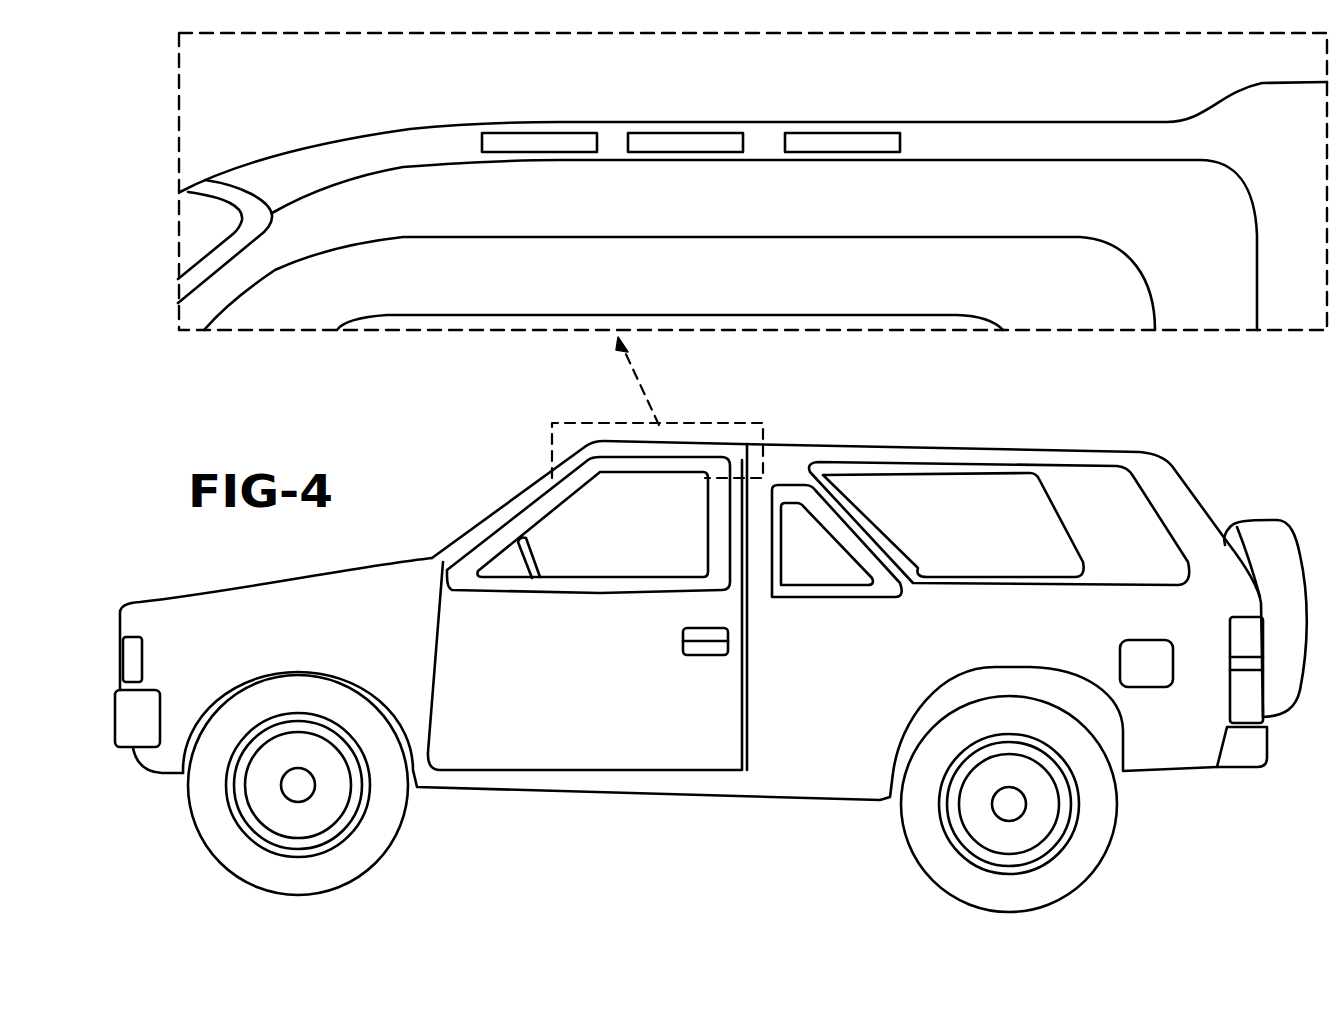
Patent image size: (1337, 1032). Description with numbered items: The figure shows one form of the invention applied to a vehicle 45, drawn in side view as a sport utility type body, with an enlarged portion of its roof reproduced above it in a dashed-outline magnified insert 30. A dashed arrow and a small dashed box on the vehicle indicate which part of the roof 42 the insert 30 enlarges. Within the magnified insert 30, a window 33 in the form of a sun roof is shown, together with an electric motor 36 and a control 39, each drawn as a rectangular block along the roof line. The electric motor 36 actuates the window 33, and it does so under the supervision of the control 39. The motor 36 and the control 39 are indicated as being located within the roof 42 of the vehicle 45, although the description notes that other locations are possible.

The magnified insert 30 is at (283, 332).
The window 33 is at (908, 133).
The electric motor 36 is at (513, 133).
The control 39 is at (712, 133).
The roof 42 is at (993, 122).
The vehicle 45 is at (604, 689).